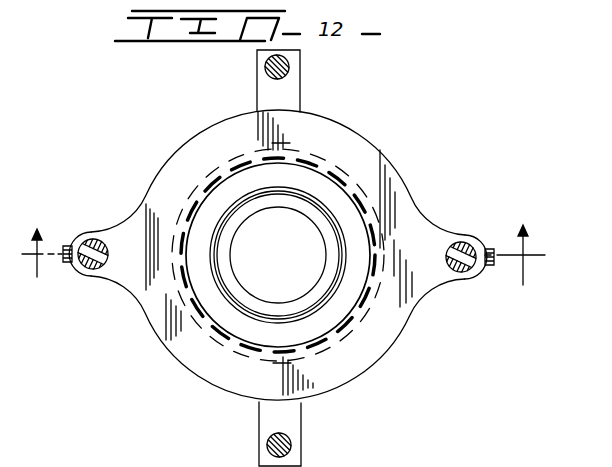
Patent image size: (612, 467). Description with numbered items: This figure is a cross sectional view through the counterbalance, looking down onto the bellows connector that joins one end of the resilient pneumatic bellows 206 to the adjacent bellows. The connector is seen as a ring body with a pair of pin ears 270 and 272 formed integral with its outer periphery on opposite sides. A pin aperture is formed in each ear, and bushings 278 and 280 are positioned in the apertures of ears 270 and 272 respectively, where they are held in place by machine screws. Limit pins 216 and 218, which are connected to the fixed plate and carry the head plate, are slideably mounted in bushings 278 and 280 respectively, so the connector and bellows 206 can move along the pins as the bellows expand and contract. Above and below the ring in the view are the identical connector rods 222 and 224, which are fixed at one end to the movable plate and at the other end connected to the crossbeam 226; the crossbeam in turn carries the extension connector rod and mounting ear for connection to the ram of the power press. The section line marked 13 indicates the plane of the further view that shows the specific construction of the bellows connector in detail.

The resilient pneumatic bellows 206 is at (362, 198).
The pin 216 is at (96, 262).
The pin 218 is at (458, 264).
The connector rod 222 is at (287, 63).
The connector rod 224 is at (289, 442).
The crossbeam 226 is at (290, 95).
The pin ear 270 is at (103, 230).
The pin ear 272 is at (453, 232).
The bushing 278 is at (82, 267).
The bushing 280 is at (450, 268).
The section line 13- 13 is at (281, 257).